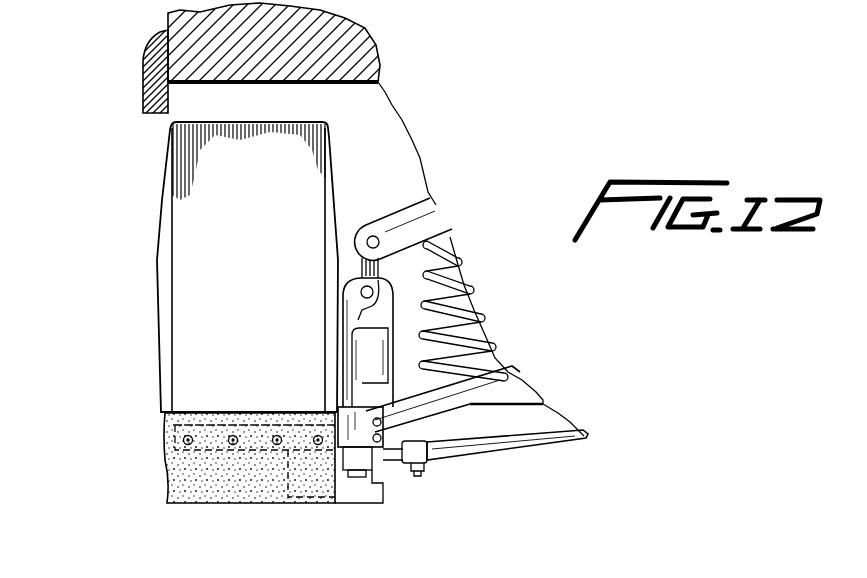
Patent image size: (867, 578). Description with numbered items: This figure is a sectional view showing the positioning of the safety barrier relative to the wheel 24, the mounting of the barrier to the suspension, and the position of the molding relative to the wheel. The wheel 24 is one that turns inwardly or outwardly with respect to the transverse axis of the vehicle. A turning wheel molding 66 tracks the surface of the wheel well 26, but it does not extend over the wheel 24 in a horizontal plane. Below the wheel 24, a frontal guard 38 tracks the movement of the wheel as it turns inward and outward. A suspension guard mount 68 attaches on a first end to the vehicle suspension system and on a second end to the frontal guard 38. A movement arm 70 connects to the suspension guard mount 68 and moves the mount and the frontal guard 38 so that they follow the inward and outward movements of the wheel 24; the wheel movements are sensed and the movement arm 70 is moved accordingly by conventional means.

The wheel 24 is at (183, 293).
The wheel well 26 is at (180, 112).
The frontal guard 38 is at (177, 478).
The turning wheel molding 66 is at (145, 60).
The suspension guard mount 68 is at (387, 483).
The movement arm 70 is at (584, 440).